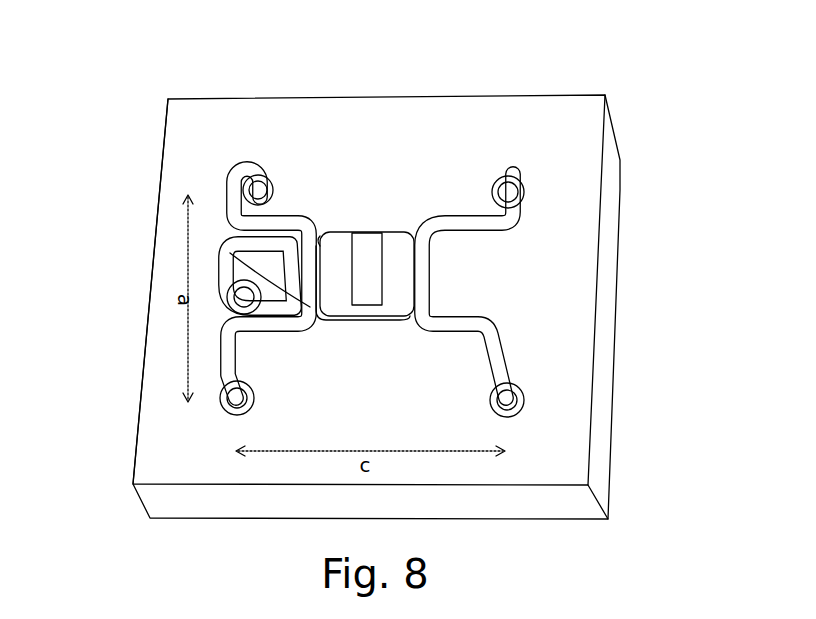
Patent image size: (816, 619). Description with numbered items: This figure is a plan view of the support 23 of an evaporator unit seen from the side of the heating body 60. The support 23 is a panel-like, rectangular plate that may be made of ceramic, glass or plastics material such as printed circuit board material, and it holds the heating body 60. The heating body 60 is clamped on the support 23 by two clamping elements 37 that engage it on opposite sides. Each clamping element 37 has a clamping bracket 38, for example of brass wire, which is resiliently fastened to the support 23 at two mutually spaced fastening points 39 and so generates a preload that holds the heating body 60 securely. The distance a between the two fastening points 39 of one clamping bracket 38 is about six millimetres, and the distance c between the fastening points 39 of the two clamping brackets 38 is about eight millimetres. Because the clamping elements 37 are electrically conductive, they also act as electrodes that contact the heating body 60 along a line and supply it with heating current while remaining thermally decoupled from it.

The support 23 is at (614, 397).
The clamping element 37 is at (287, 198).
The clamping bracket 38 is at (243, 305).
The fastening point 39 is at (262, 178).
The heating body 60 is at (363, 247).